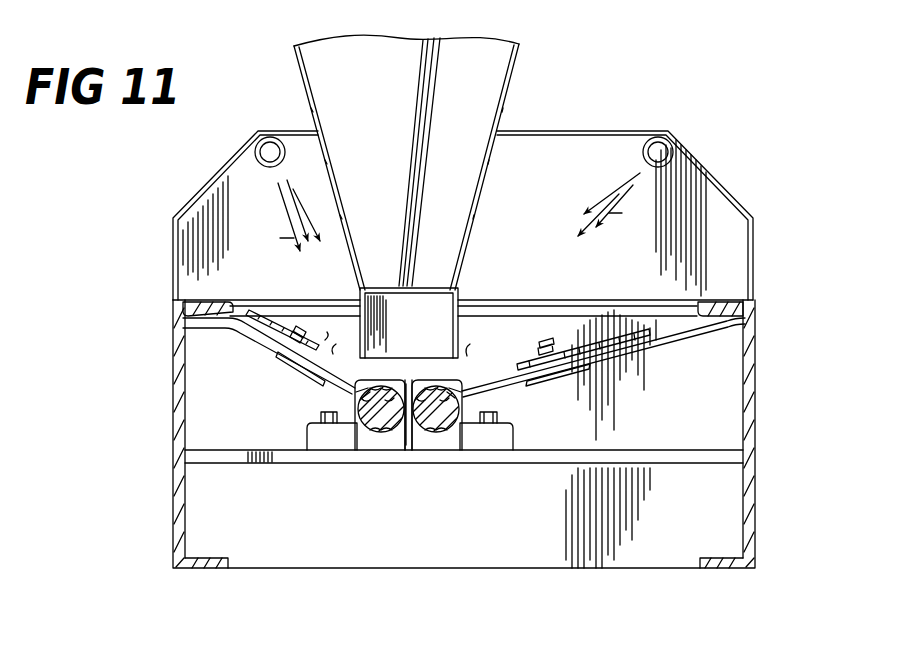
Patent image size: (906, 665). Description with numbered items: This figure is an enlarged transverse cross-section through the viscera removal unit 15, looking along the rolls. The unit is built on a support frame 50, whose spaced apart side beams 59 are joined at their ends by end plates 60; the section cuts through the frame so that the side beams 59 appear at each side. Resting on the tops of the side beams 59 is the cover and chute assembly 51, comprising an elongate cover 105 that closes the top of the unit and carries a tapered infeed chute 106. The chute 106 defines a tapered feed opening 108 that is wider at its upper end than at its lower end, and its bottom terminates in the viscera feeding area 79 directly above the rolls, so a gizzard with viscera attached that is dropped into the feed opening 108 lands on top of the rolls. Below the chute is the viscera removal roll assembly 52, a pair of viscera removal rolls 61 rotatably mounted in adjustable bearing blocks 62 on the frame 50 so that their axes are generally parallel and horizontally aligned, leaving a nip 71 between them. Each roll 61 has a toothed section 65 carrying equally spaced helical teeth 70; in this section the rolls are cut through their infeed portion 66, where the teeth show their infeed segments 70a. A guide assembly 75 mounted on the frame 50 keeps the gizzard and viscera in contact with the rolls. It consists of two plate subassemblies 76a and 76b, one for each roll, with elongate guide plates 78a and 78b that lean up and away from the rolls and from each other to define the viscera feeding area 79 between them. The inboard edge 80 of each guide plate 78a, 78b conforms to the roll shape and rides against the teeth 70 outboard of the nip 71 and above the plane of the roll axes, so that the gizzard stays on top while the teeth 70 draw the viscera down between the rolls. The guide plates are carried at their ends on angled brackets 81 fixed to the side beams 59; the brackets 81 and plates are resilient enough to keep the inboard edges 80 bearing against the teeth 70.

The viscera removal unit 15 is at (136, 549).
The support frame 50 is at (174, 492).
The cover and chute assembly 51 is at (548, 92).
The viscera removal roll assembly 52 is at (351, 464).
The side beams 59 is at (174, 392).
The end plates 60 is at (648, 404).
The viscera removal rolls 61 is at (408, 452).
The bearing blocks 62 is at (307, 430).
The toothed section 65 is at (462, 433).
The infeed portion 66 is at (357, 402).
The teeth 70 is at (366, 430).
The infeed segment 70a is at (384, 432).
The nip 71 is at (426, 384).
The guide assembly 75 is at (274, 357).
The plate subassembly 76a is at (587, 355).
The plate subassembly 76b is at (292, 368).
The guide plate 78a is at (504, 380).
The guide plate 78b is at (310, 376).
The viscera feeding area 79 is at (406, 372).
The inboard edge 80 is at (360, 385).
The angled brackets 81 is at (249, 334).
The cover 105 is at (617, 128).
The infeed chute 106 is at (306, 100).
The feed opening 108 is at (466, 191).